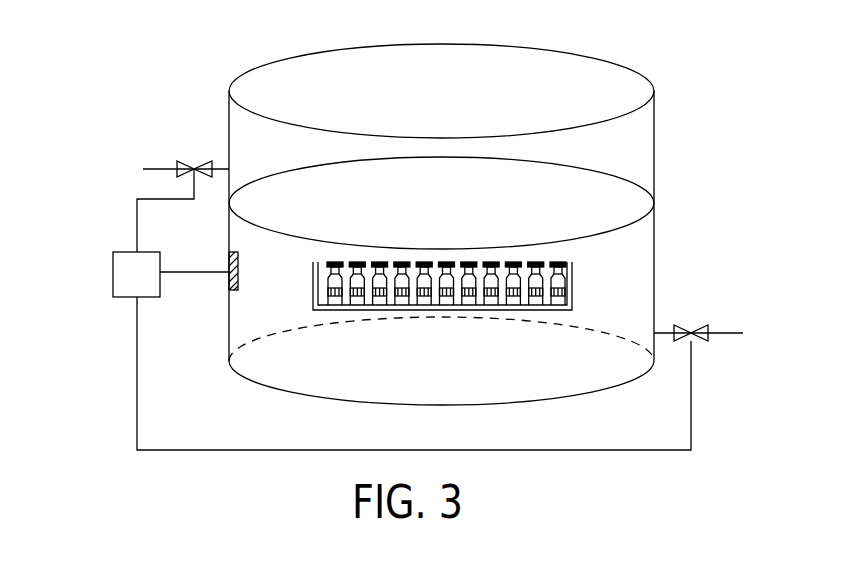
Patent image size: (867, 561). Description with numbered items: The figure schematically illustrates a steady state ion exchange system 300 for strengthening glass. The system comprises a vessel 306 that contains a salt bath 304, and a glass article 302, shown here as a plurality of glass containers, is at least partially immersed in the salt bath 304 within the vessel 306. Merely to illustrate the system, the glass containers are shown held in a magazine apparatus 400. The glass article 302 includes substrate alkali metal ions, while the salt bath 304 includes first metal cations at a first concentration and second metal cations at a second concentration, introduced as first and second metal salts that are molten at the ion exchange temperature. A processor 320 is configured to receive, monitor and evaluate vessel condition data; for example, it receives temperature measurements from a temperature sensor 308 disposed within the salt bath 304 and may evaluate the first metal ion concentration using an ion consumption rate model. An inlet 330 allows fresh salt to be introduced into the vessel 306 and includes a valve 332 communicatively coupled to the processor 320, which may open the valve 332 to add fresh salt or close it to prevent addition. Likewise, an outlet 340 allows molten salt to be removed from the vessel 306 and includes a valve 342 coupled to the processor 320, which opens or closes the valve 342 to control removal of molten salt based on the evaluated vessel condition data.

The ion exchange system 300 is at (156, 77).
The glass article 302 is at (552, 281).
The salt bath 304 is at (645, 234).
The vessel 306 is at (654, 130).
The temperature sensor 308 is at (229, 268).
The processor 320 is at (152, 293).
The inlet 330 is at (217, 148).
The valve 332 is at (186, 161).
The outlet 340 is at (667, 314).
The valve 342 is at (695, 343).
The magazine apparatus 400 is at (292, 269).